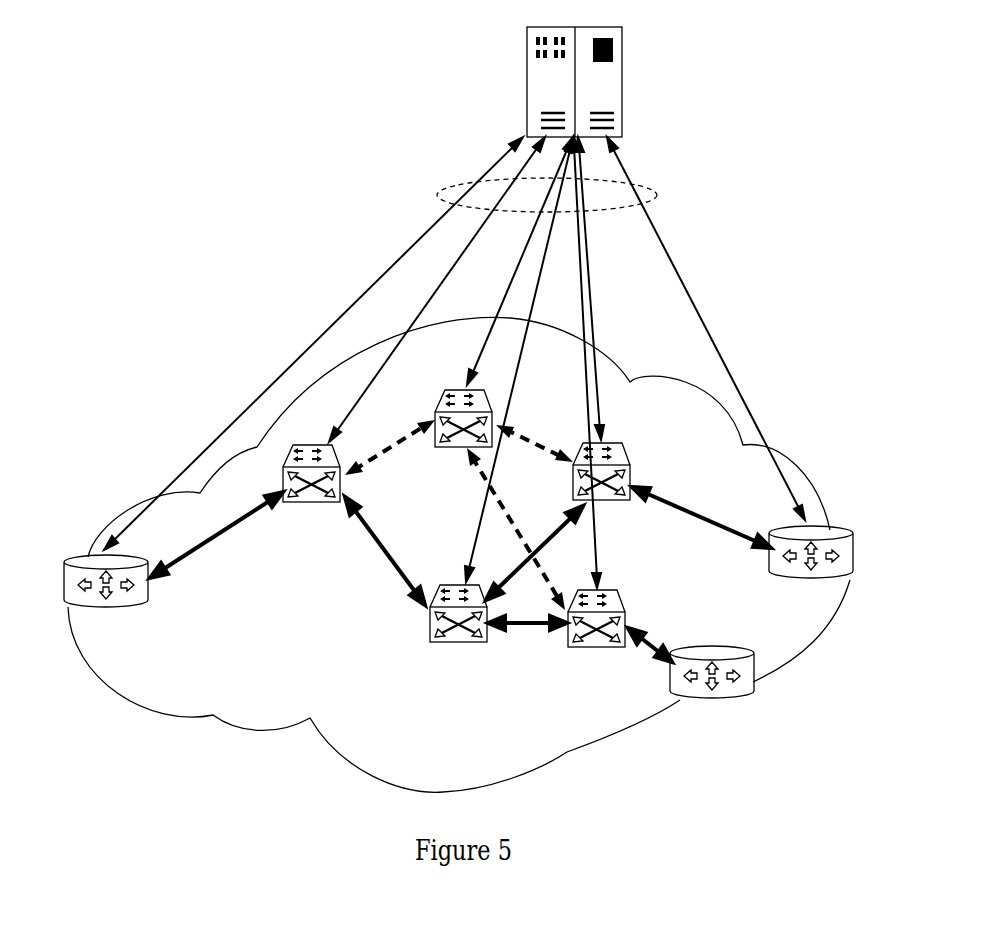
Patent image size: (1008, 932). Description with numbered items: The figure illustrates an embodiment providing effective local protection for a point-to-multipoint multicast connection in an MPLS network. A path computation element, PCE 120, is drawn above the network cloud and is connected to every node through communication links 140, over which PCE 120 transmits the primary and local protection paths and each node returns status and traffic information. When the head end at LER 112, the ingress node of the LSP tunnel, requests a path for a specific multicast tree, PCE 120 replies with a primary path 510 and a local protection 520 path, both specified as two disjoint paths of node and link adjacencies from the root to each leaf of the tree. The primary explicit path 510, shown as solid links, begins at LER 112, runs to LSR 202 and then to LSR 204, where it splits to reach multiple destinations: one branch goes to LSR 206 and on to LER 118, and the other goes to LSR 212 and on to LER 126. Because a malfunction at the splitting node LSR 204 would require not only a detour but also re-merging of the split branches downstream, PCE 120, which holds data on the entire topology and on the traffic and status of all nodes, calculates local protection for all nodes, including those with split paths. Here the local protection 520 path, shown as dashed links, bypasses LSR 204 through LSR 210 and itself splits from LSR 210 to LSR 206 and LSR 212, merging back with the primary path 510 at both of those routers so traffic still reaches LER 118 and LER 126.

The PCE 120 is at (622, 76).
The communication links 140 is at (657, 193).
The LSR 202 is at (320, 446).
The LSR 210 is at (492, 396).
The LSR 206 is at (628, 448).
The LSR 204 is at (470, 584).
The LSR 212 is at (620, 591).
The LER 112 is at (125, 557).
The LER 118 is at (828, 528).
The LER 126 is at (735, 652).
The primary path 510 is at (382, 535).
The local protection path 520 is at (530, 445).